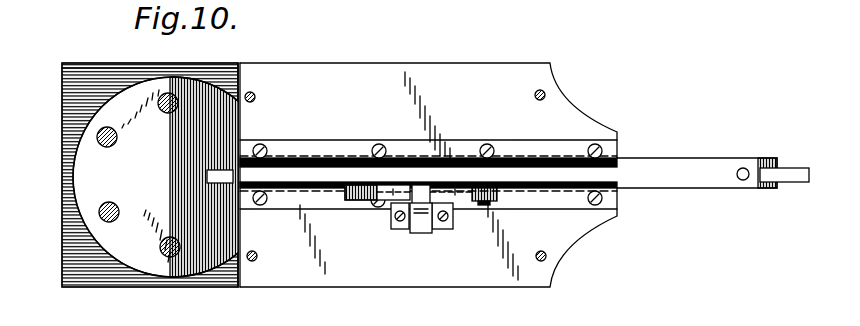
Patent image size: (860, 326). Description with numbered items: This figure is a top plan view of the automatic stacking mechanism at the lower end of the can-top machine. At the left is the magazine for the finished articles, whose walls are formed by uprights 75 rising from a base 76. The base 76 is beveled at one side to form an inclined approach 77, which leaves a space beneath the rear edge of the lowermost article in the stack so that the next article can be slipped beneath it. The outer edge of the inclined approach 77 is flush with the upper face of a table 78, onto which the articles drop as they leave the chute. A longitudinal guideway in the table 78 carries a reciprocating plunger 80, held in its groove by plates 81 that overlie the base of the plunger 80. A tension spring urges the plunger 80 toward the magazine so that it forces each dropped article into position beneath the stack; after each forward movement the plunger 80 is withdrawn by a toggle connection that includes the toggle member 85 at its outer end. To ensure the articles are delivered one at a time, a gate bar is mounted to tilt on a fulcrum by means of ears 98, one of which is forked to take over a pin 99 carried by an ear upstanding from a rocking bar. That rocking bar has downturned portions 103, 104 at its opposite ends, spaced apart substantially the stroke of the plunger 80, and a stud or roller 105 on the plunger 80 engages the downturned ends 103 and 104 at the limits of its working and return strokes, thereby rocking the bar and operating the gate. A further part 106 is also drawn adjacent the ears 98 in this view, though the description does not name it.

The uprights 75 is at (166, 238).
The base 76 is at (155, 91).
The inclined approach 77 is at (213, 103).
The table 78 is at (330, 73).
The plunger 80 is at (467, 158).
The plates 81 is at (350, 148).
The toggle member 85 is at (797, 173).
The ears 98 is at (423, 222).
The pin 99 is at (425, 196).
The downturned portion 103 is at (495, 199).
The downturned portion 104 is at (373, 194).
The stud or roller 105 is at (505, 168).
The screw 106 is at (414, 227).